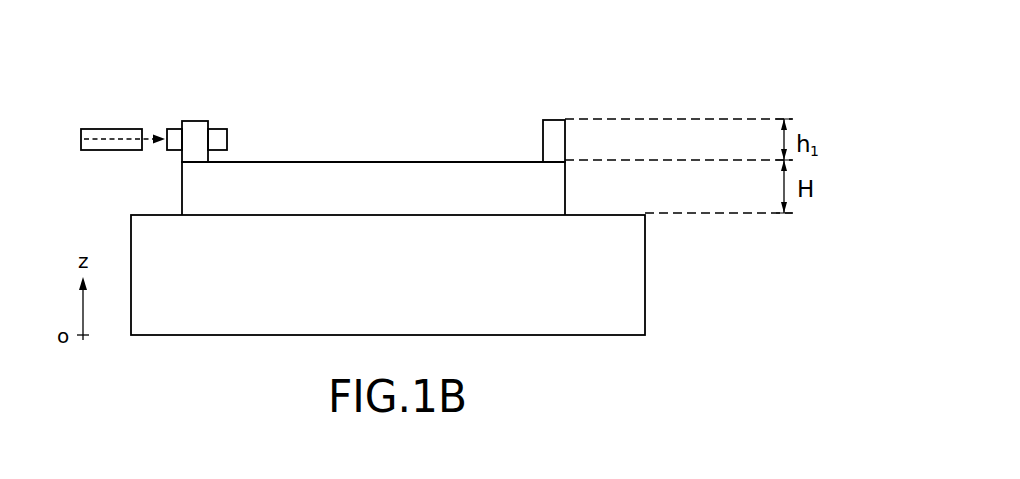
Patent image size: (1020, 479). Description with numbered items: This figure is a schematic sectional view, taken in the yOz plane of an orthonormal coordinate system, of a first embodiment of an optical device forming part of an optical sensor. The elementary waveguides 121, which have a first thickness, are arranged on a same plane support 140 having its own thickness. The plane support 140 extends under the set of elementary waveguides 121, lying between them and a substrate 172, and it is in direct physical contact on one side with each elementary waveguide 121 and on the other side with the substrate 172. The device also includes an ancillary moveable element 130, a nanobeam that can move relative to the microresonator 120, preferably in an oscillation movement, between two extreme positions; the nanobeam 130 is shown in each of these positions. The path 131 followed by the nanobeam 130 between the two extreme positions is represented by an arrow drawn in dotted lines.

The microresonator 120 is at (583, 140).
The elementary waveguide 121 is at (555, 127).
The ancillary moveable element 130 is at (92, 135).
The path 131 is at (147, 139).
The plane support 140 is at (553, 185).
The substrate 172 is at (625, 280).